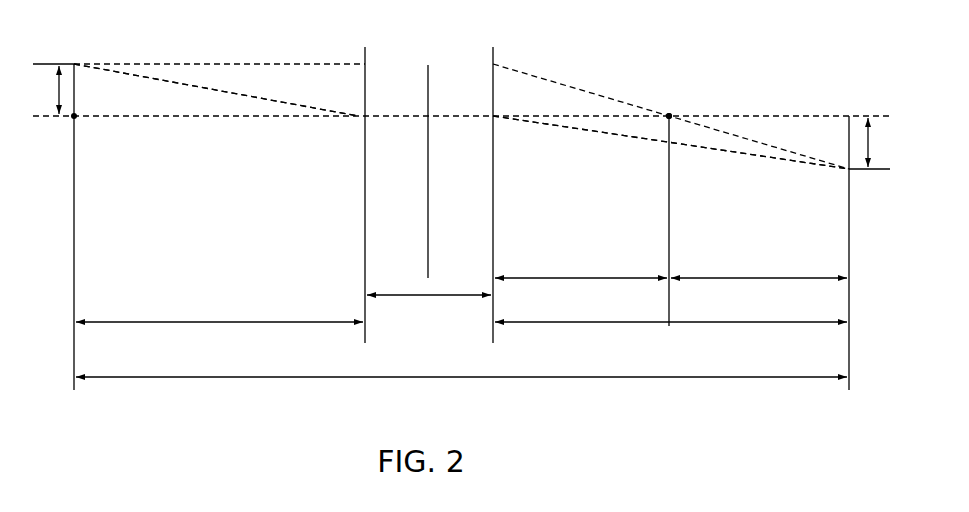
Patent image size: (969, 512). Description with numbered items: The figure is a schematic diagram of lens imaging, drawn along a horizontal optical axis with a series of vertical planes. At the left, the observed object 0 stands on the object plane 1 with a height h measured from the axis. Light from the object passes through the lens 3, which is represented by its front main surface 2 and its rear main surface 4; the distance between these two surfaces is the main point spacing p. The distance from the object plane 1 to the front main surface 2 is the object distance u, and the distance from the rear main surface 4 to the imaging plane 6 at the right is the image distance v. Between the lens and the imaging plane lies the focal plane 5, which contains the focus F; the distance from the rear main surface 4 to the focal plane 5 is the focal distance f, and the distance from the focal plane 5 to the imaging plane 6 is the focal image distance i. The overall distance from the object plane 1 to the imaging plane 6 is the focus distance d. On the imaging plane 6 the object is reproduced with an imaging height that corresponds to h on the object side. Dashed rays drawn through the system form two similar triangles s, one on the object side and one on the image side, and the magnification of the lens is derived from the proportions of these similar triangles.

The object 0 is at (70, 121).
The object plane 1 is at (56, 215).
The front main surface 2 is at (364, 185).
The lens 3 is at (427, 159).
The rear main surface 4 is at (492, 185).
The focal plane 5 is at (666, 207).
The imaging plane 6 is at (866, 241).
The focus F is at (674, 112).
The similar triangle s is at (182, 104).
The object height h is at (464, 116).
The object distance u is at (219, 333).
The main point spacing p is at (429, 306).
The focal distance f is at (581, 289).
The focal image distance i is at (759, 289).
The image distance v is at (671, 335).
The focus distance d is at (461, 392).